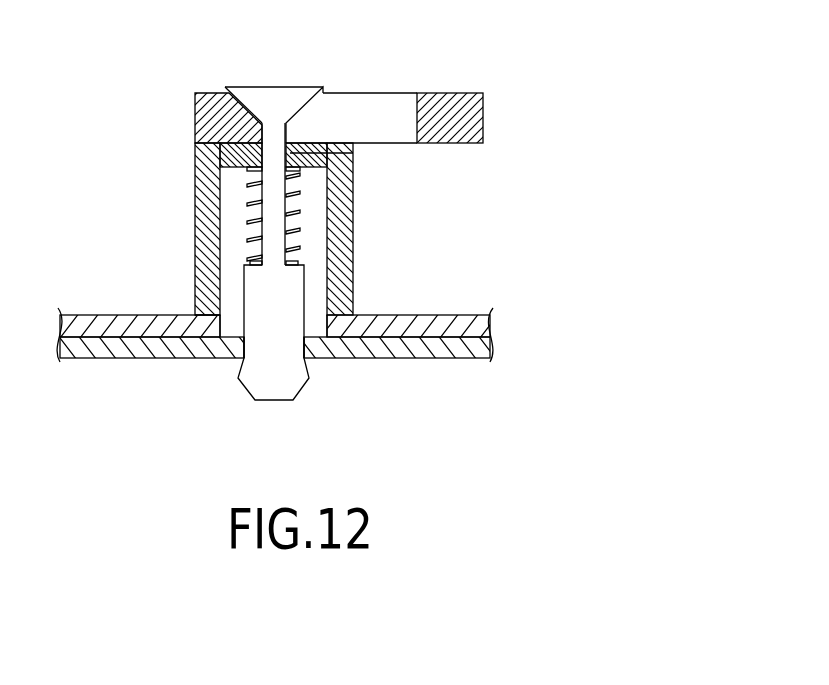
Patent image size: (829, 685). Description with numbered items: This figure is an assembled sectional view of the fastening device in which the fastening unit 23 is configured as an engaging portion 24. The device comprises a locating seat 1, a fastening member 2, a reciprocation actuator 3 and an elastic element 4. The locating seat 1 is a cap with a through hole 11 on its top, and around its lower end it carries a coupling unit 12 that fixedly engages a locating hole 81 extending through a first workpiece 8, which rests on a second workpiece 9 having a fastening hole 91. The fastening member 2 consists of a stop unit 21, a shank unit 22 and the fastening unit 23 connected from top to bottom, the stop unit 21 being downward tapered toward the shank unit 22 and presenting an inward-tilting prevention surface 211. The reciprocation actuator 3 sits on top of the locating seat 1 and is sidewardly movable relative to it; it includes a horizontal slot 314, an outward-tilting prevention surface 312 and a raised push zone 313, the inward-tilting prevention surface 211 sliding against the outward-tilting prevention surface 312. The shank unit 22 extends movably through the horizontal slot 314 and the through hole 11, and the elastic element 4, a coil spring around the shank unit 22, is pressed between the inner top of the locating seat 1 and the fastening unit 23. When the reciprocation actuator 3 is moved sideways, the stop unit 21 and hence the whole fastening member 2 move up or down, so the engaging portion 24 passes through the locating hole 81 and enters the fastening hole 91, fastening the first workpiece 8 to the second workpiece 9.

The locating seat 1 is at (314, 279).
The through hole 11 is at (345, 156).
The coupling unit 12 is at (212, 322).
The fastening member 2 is at (224, 232).
The stop unit 21 is at (224, 72).
The inward-tilting prevention surface 211 is at (247, 108).
The shank unit 22 is at (272, 192).
The fastening unit 23 is at (255, 298).
The engaging portion 24 is at (273, 388).
The reciprocation actuator 3 is at (310, 83).
The outward-tilting prevention surface 312 is at (300, 111).
The horizontal slot 314 is at (360, 115).
The push zone 313 is at (407, 92).
The elastic element 4 is at (247, 238).
The first workpiece 8 is at (275, 325).
The locating hole 81 is at (347, 333).
The second workpiece 9 is at (275, 365).
The fastening hole 91 is at (308, 350).